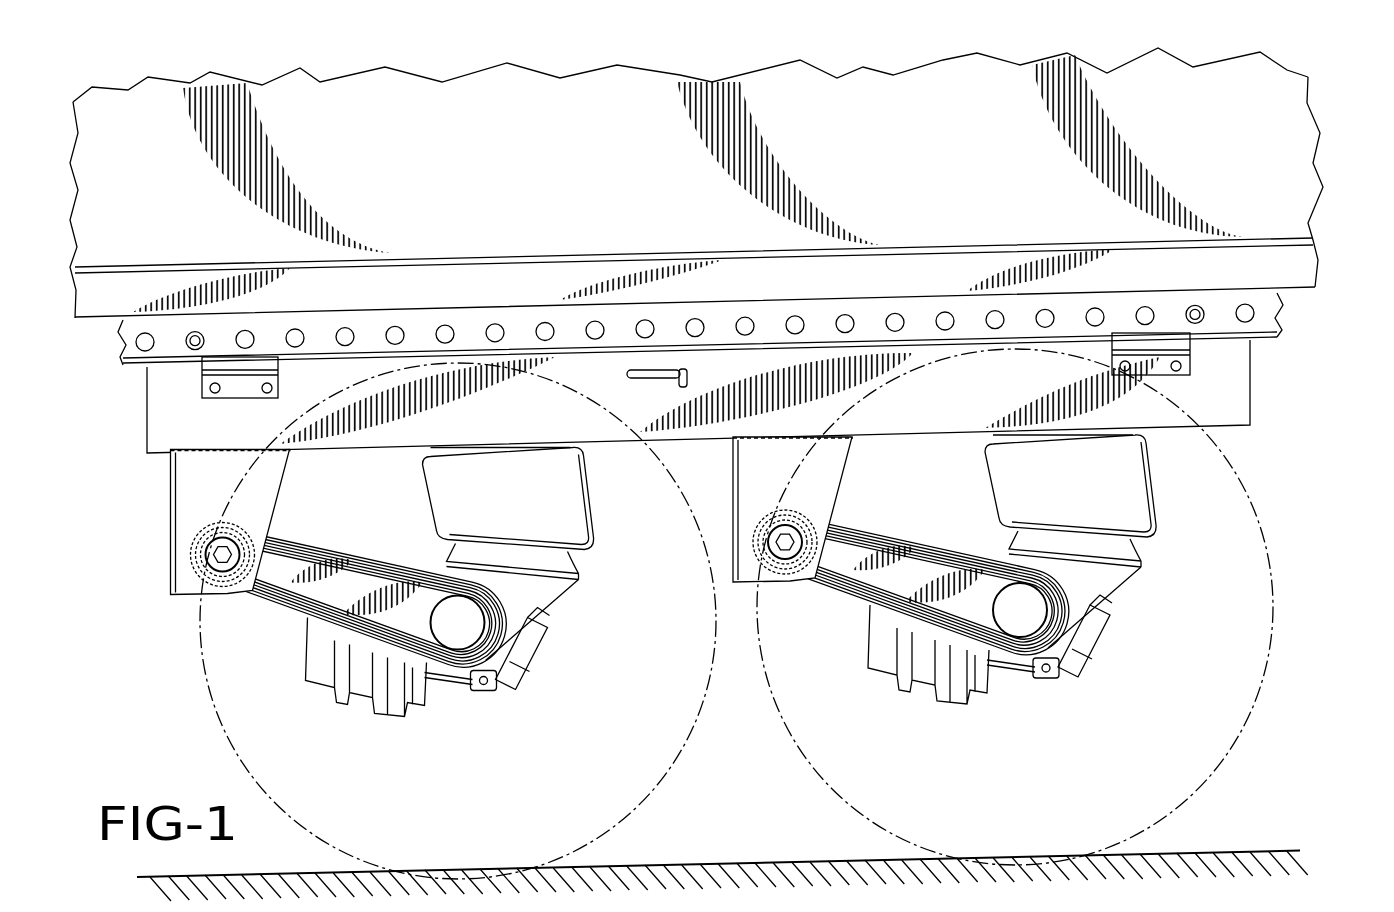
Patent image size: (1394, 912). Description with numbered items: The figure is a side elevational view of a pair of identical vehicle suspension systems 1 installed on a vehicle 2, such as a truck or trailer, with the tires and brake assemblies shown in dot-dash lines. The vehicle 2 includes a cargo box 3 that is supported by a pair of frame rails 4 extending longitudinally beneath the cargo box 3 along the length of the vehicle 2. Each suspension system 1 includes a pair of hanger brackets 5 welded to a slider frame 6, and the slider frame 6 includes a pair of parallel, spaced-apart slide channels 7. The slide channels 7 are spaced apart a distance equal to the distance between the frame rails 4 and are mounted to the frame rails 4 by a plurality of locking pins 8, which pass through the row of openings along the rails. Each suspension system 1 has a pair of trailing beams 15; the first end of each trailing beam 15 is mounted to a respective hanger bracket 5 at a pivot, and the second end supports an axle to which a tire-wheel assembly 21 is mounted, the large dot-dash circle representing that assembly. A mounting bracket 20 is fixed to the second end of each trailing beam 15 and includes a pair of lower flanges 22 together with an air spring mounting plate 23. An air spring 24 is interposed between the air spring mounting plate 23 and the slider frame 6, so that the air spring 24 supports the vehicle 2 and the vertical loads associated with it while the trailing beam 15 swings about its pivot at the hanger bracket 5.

The vehicle suspension system 1 is at (967, 569).
The vehicle 2 is at (1305, 54).
The cargo box 3 is at (1295, 160).
The frame rails 4 is at (1267, 313).
The hanger brackets 5 is at (752, 463).
The slider frame 6 is at (1262, 365).
The slide channels 7 is at (1228, 397).
The locking pins 8 is at (192, 333).
The trailing beams 15 is at (937, 540).
The mounting bracket 20 is at (1078, 596).
The tire-wheel assembly 21 is at (1225, 787).
The lower flanges 22 is at (1113, 578).
The air spring mounting plate 23 is at (1140, 562).
The air spring 24 is at (1133, 490).